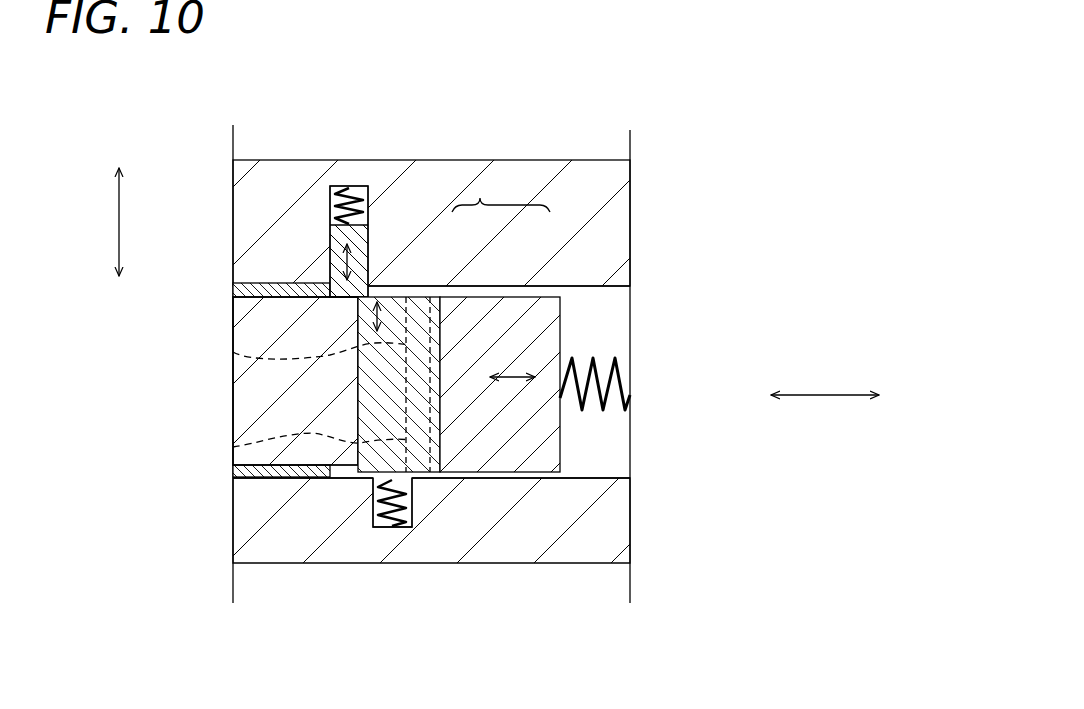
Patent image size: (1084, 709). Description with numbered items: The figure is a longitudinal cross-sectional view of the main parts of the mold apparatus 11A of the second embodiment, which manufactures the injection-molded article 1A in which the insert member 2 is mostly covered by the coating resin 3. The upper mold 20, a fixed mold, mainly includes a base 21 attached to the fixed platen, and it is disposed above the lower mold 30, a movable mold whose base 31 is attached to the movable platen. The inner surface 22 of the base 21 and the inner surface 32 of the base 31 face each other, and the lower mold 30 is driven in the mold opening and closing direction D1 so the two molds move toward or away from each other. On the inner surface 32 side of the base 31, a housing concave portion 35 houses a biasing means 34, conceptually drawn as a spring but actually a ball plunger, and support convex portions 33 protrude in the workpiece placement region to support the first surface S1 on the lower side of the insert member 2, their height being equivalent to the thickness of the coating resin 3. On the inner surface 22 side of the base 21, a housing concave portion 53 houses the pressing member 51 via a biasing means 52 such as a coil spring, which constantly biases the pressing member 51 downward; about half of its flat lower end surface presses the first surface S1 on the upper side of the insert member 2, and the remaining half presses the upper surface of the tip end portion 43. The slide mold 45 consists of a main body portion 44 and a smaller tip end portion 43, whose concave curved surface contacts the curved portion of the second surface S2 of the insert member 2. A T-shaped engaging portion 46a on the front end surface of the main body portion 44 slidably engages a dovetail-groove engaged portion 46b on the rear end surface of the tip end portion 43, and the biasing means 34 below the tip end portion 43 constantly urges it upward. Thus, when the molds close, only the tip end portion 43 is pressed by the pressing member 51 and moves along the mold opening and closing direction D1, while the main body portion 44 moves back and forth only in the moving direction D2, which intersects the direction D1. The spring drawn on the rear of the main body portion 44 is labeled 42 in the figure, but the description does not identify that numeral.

The injection-molded article 1A is at (233, 377).
The insert member 2 is at (258, 407).
The coating resin 3 is at (233, 301).
The mold apparatus 11A is at (716, 170).
The upper mold 20 is at (630, 176).
The base 21 is at (620, 216).
The inner surface 22 is at (607, 248).
The lower mold 30 is at (630, 548).
The base 31 is at (612, 517).
The inner surface 32 is at (608, 476).
The support convex portion 33 is at (340, 475).
The biasing means 34 is at (403, 497).
The housing concave portion 35 is at (413, 500).
The horizontal spring 42 is at (587, 411).
The tip end portion 43 is at (393, 297).
The main body portion 44 is at (527, 297).
The slide mold 45 is at (480, 198).
The engaging portion 46a is at (233, 352).
The engaged portion 46b is at (233, 447).
The pressing member 51 is at (363, 253).
The biasing means 52 is at (346, 184).
The housing concave portion 53 is at (330, 210).
The first surface S1 is at (283, 291).
The second surface S2 is at (361, 397).
The mold opening and closing direction D1 is at (120, 218).
The moving direction D2 is at (824, 396).